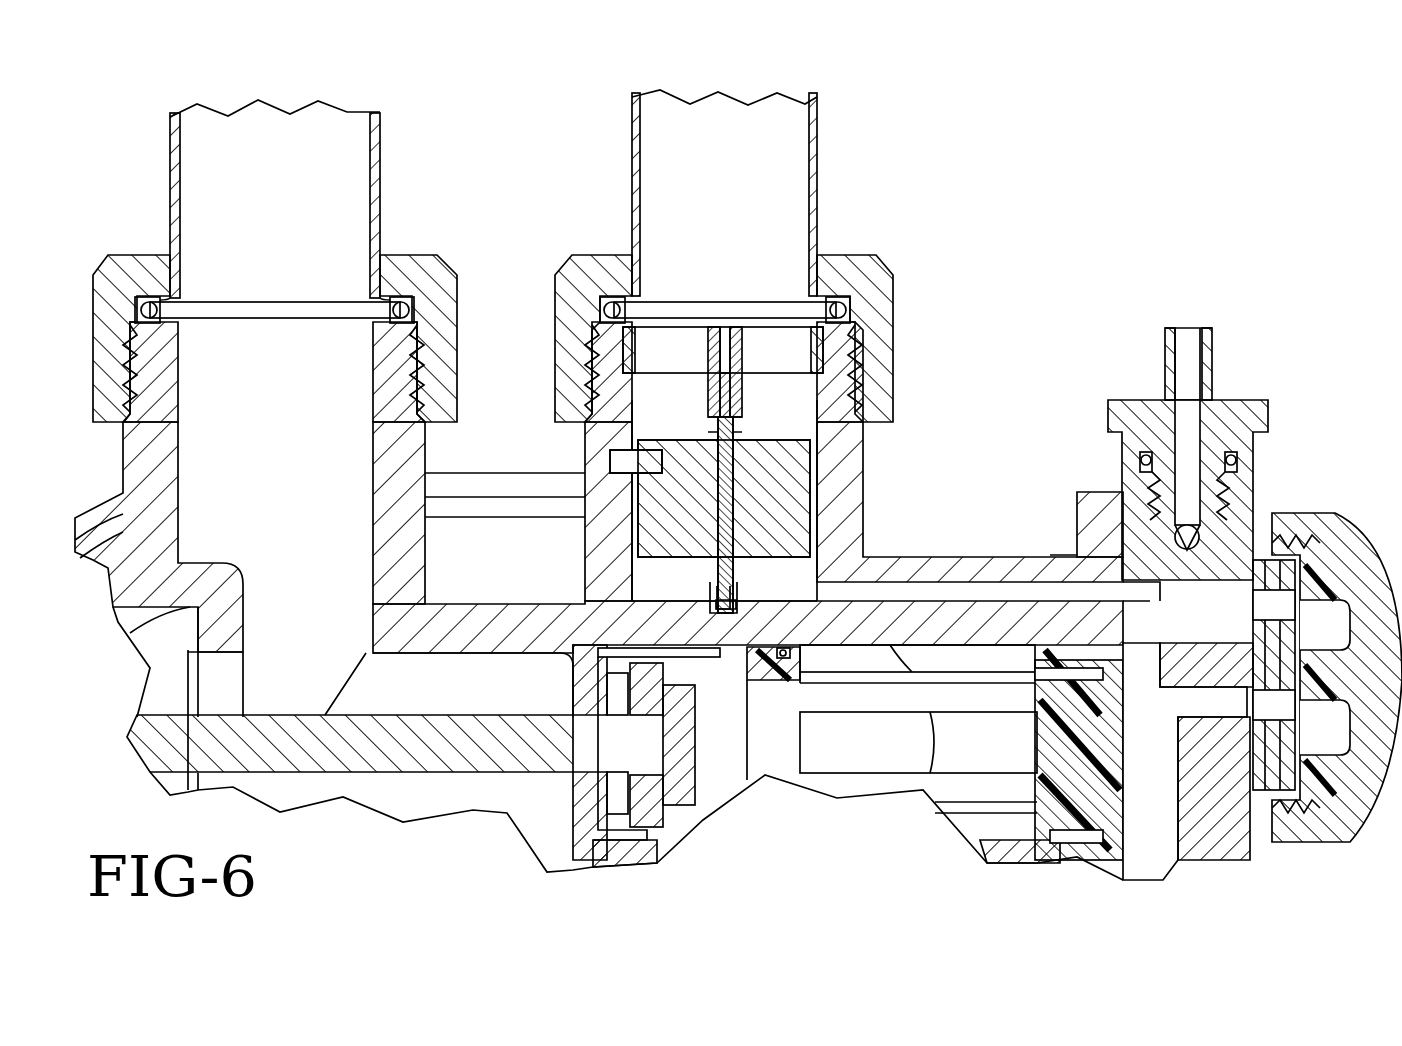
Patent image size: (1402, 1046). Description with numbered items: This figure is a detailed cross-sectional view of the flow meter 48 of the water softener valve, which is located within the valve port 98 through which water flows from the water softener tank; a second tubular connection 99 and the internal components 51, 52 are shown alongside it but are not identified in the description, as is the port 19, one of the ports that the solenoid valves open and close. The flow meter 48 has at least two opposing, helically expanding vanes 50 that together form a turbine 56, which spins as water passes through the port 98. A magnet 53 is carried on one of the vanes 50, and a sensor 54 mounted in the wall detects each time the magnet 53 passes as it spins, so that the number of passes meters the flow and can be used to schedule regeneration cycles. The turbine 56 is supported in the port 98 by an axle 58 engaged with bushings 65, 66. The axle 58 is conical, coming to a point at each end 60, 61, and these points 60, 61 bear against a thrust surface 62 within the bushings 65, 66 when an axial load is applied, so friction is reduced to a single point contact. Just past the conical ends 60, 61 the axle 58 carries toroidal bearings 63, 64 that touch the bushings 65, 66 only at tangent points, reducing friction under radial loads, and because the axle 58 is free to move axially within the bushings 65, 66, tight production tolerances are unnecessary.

The port 19 is at (884, 740).
The flow meter 48 is at (722, 297).
The helically expanding vanes 50 is at (740, 593).
The chamber wall 51 is at (745, 560).
The piston body 52 is at (647, 438).
The magnet 53 is at (652, 466).
The sensor 54 is at (622, 457).
The turbine 56 is at (677, 513).
The axle 58 is at (705, 572).
The conical end point 60 is at (718, 400).
The conical end point 61 is at (728, 575).
The thrust surface 62 is at (725, 372).
The toroidal bearing 63 is at (724, 404).
The toroidal bearing 64 is at (778, 558).
The bushing 65 is at (714, 400).
The bushing 66 is at (745, 590).
The valve port 98 is at (784, 118).
The first conduit 99 is at (311, 120).